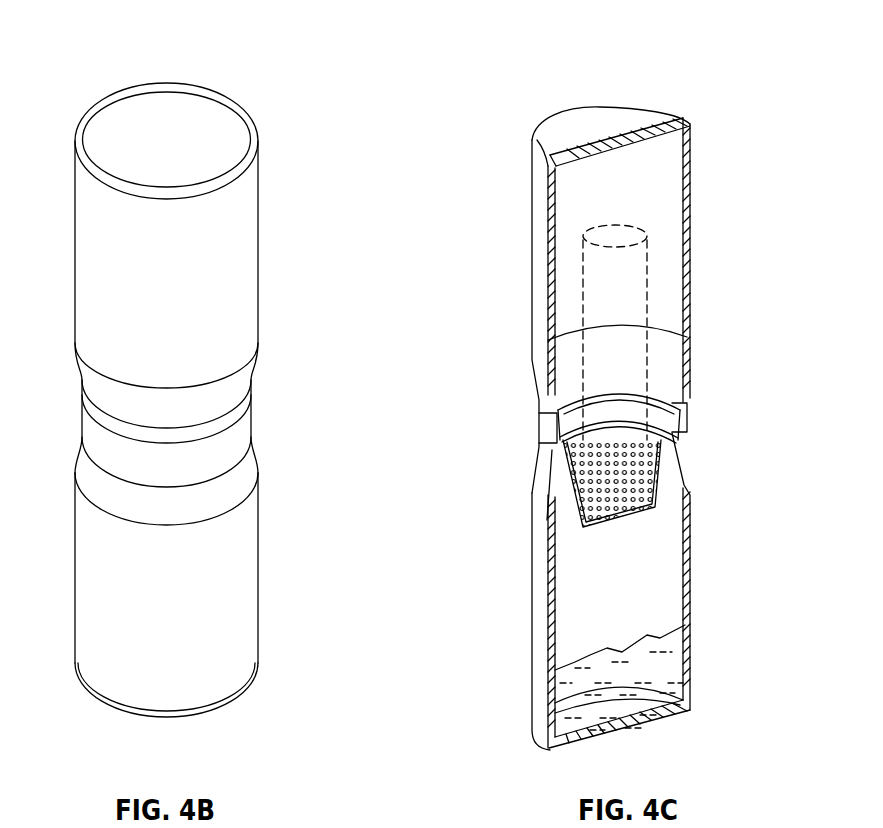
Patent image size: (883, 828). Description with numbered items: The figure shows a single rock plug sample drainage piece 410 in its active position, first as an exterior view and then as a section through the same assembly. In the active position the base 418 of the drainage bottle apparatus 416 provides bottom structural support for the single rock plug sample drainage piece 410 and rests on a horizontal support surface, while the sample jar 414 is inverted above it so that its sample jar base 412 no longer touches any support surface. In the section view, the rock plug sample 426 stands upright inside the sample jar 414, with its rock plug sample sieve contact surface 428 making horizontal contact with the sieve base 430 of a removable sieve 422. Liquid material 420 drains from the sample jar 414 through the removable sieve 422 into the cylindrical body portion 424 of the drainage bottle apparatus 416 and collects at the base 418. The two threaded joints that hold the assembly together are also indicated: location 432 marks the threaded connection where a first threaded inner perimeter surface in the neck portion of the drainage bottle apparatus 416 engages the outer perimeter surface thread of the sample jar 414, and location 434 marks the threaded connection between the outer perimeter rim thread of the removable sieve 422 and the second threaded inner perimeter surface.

In FIG. 4B, the single rock plug sample drainage piece 410 is at (303, 88).
In FIG. 4C, the single rock plug sample drainage piece 410 is at (797, 88).
In FIG. 4B, the sample jar base 412 is at (160, 88).
In FIG. 4C, the sample jar base 412 is at (605, 108).
In FIG. 4B, the sample jar 414 is at (82, 255).
In FIG. 4C, the sample jar 414 is at (540, 242).
In FIG. 4B, the drainage bottle apparatus 416 is at (82, 603).
In FIG. 4C, the drainage bottle apparatus 416 is at (545, 582).
In FIG. 4B, the base 418 is at (135, 715).
In FIG. 4C, the base 418 is at (582, 736).
In FIG. 4C, the liquid material 420 is at (673, 660).
In FIG. 4C, the removable sieve 422 is at (618, 481).
In FIG. 4C, the cylindrical body portion 424 is at (582, 609).
In FIG. 4C, the rock plug sample 426 is at (643, 310).
In FIG. 4C, the rock plug sample sieve contact surface 428 is at (570, 505).
In FIG. 4C, the sieve base 430 is at (628, 513).
In FIG. 4C, the threaded connection location between sample jar and drainage bottle apparatus 432 is at (545, 418).
In FIG. 4C, the threaded connection location between sieve and second threaded inner perimeter s 434 is at (683, 405).